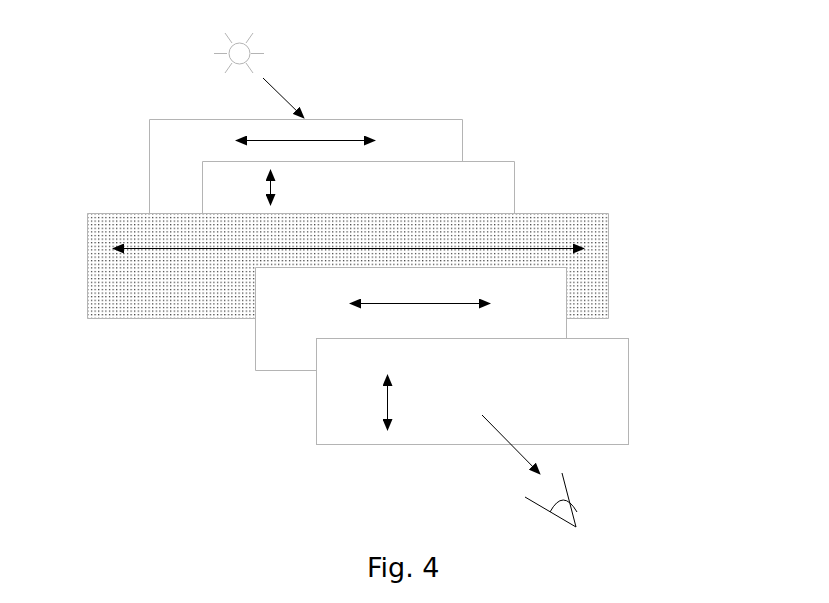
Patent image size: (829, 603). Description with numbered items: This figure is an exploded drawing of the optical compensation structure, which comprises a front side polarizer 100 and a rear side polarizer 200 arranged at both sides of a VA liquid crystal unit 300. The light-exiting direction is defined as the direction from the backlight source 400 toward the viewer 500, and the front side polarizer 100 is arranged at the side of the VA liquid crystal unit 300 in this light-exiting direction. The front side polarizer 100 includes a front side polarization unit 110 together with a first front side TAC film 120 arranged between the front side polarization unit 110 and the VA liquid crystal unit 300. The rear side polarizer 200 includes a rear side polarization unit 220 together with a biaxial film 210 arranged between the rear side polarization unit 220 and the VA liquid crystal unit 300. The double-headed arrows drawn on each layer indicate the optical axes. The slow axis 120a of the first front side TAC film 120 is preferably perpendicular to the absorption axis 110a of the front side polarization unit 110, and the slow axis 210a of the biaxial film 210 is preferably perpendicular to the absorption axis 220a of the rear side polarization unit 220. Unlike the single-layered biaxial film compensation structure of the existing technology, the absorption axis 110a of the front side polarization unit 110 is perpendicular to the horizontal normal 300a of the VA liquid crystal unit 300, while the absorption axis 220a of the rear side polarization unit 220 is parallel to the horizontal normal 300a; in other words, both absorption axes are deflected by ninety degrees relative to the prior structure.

The front side polarizer 100 is at (712, 327).
The front side polarization unit 110 is at (628, 390).
The absorption axis of the front side polarization unit 110a is at (383, 397).
The first front side TAC film 120 is at (608, 312).
The slow axis of the first front side TAC film 120a is at (352, 305).
The rear side polarizer 200 is at (558, 106).
The biaxial film 210 is at (514, 180).
The slow axis of the biaxial film 210a is at (267, 182).
The rear side polarization unit 220 is at (462, 132).
The absorption axis of the rear side polarization unit 220a is at (253, 138).
The VA liquid crystal unit 300 is at (608, 262).
The horizontal normal of the VA liquid crystal unit 300a is at (172, 249).
The backlight source 400 is at (258, 56).
The viewer 500 is at (577, 512).